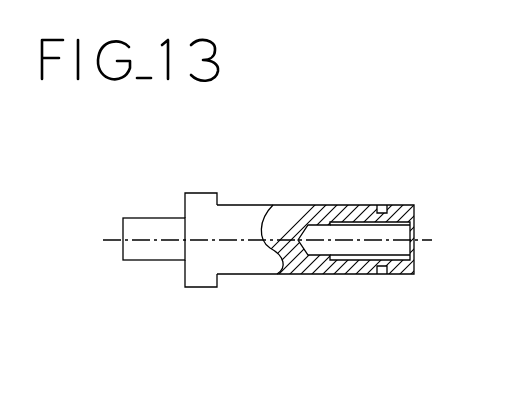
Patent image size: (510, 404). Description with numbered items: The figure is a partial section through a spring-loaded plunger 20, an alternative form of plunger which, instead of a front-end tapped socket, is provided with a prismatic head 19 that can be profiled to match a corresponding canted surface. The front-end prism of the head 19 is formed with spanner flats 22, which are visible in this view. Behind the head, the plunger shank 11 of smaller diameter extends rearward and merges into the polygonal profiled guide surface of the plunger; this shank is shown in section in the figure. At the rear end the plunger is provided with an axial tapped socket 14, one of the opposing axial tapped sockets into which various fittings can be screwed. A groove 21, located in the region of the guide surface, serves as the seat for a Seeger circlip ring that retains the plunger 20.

The plunger shank 11 is at (243, 258).
The axial tapped socket 14 is at (392, 235).
The prismatic head 19 is at (148, 218).
The plunger 20 is at (198, 279).
The groove 21 is at (377, 268).
The spanner flats 22 is at (153, 261).